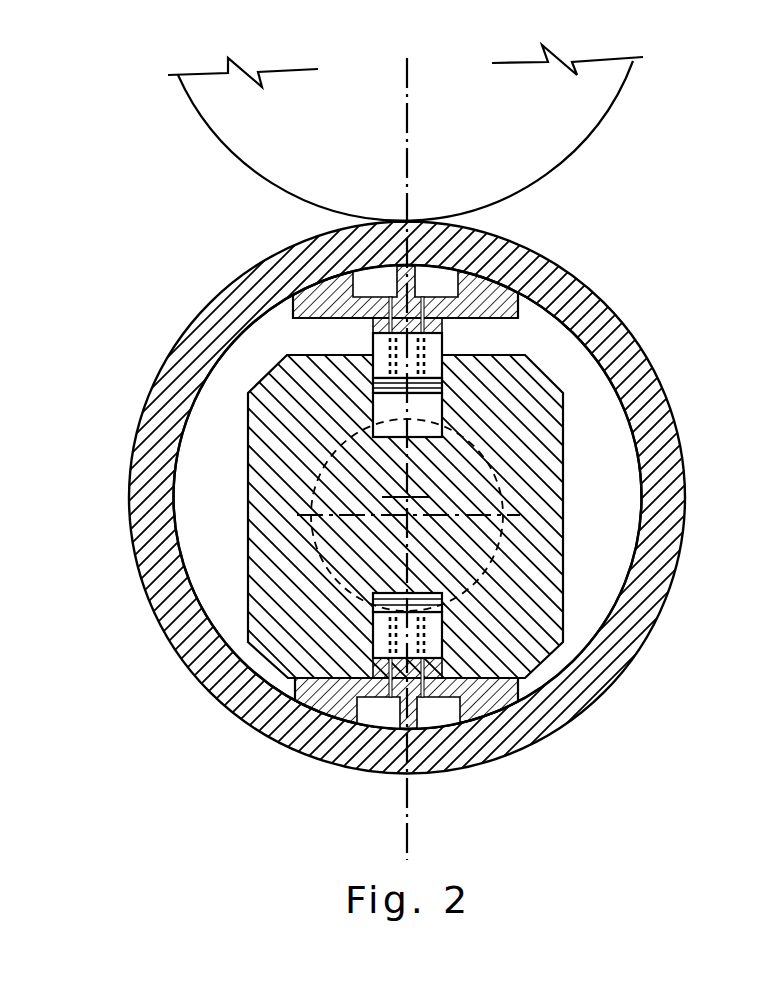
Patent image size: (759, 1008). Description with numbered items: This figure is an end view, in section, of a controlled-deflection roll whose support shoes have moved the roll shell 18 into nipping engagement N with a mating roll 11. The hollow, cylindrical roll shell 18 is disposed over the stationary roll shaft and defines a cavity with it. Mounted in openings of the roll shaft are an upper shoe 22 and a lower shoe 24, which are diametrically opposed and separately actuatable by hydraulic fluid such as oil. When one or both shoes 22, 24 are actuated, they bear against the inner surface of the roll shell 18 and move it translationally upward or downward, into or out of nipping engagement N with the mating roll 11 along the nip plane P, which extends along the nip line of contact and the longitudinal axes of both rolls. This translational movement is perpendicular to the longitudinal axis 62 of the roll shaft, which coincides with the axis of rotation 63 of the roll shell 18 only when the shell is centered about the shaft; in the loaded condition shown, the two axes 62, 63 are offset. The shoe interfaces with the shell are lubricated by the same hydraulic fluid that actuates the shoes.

The mating roll 11 is at (602, 123).
The roll shell 18 is at (627, 328).
The upper shoe 22 is at (520, 307).
The lower shoe 24 is at (520, 692).
The longitudinal axis of the roll shaft 62 is at (410, 517).
The axis of rotation of the roll shell 63 is at (400, 498).
The nip plane P is at (405, 137).
The nipping engagement N is at (407, 222).